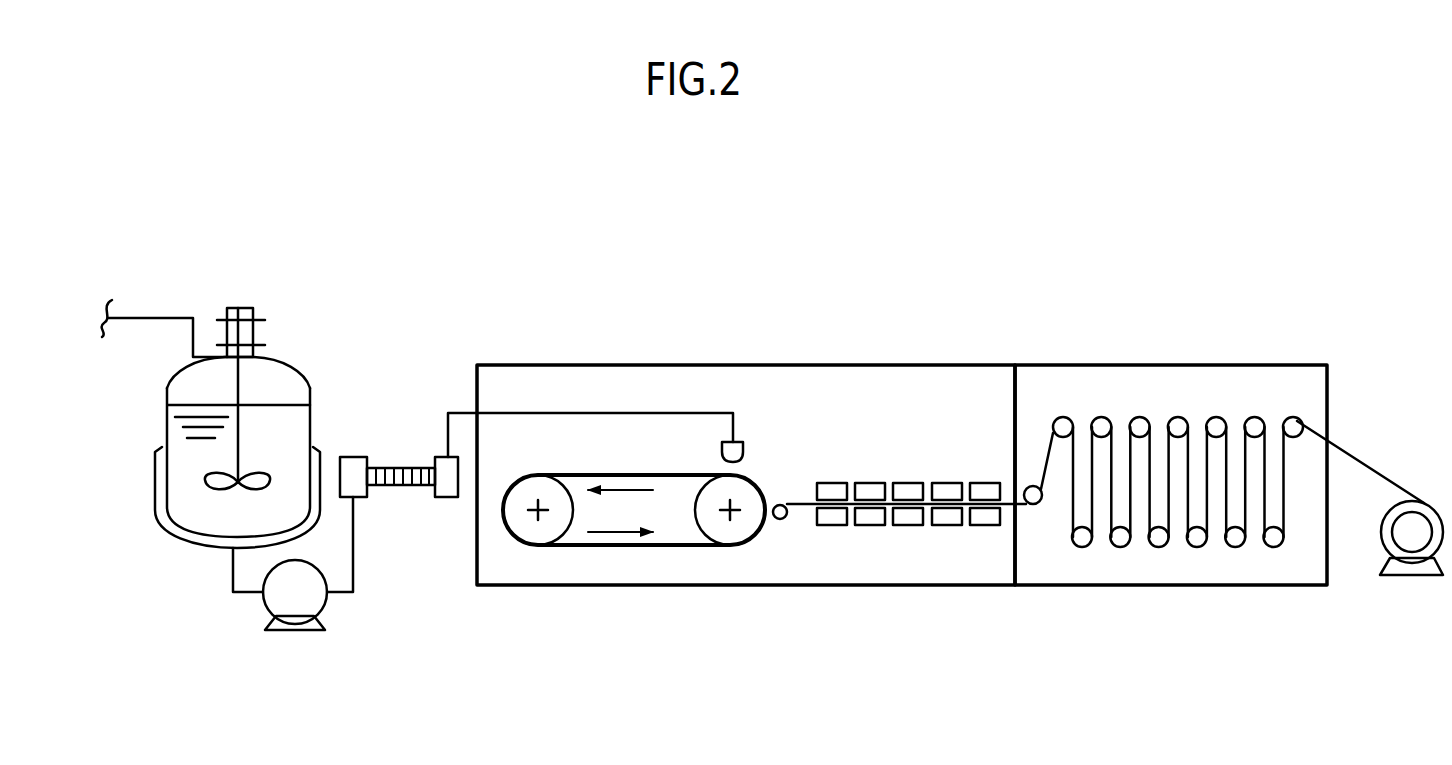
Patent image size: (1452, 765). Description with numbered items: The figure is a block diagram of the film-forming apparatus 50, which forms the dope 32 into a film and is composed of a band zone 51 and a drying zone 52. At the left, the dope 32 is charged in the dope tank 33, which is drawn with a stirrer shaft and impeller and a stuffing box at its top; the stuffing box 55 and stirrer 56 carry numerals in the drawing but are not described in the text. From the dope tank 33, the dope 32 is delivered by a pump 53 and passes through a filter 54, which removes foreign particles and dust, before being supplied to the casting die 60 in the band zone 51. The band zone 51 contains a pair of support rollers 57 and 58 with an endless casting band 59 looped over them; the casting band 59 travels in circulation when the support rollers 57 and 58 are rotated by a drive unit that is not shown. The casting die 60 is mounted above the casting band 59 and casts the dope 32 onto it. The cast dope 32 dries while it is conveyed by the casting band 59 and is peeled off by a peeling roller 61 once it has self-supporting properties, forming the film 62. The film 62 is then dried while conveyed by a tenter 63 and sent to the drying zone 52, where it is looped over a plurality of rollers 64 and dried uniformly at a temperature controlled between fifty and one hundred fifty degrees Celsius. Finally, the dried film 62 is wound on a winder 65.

The dope 32 is at (197, 507).
The dope tank 33 is at (167, 437).
The film-forming apparatus 50 is at (762, 313).
The band zone 51 is at (577, 360).
The drying zone 52 is at (1058, 360).
The pump 53 is at (300, 632).
The filter 54 is at (405, 487).
The motor 55 is at (238, 332).
The stirrer 56 is at (238, 438).
The support roller 57 is at (540, 526).
The support roller 58 is at (730, 527).
The casting band 59 is at (762, 485).
The casting die 60 is at (740, 452).
The peeling roller 61 is at (790, 522).
The film 62 is at (810, 507).
The tenter 63 is at (942, 527).
The rollers 64 is at (1180, 427).
The winder 65 is at (1412, 577).